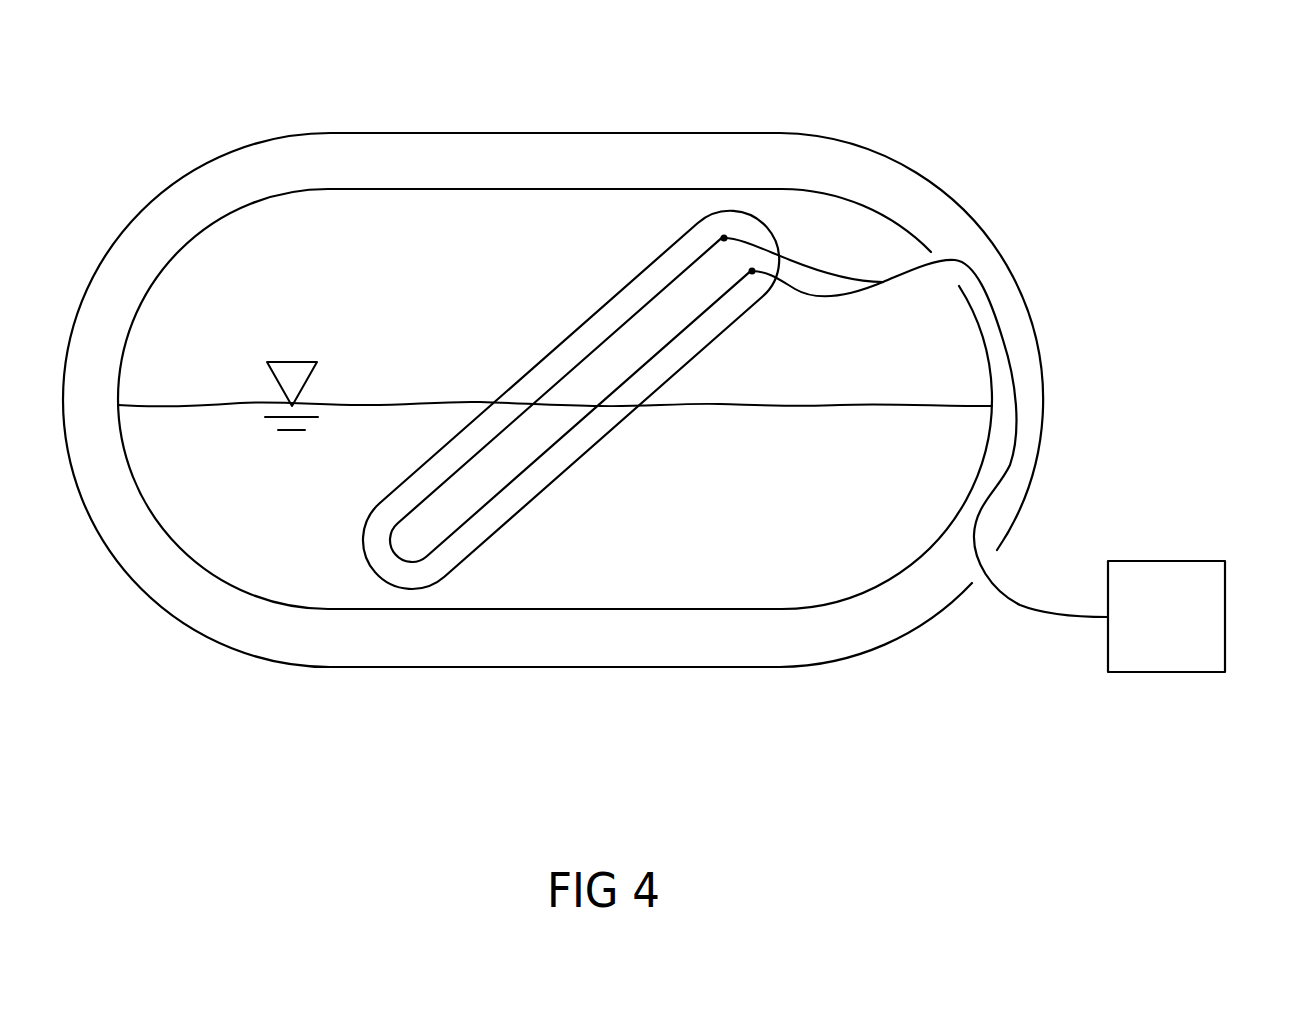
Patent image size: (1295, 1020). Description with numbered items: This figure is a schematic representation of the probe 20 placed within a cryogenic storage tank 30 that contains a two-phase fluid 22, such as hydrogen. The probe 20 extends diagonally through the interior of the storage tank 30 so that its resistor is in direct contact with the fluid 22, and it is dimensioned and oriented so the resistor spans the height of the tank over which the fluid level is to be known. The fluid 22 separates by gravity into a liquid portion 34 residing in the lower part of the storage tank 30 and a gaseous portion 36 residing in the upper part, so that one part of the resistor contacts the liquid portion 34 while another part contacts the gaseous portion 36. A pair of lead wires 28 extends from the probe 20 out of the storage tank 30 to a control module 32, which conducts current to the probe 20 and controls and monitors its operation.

The probe 20 is at (549, 305).
The fluid 22 is at (336, 245).
The lead wires 28 is at (1052, 615).
The cryogenic storage tank 30 is at (557, 133).
The control module 32 is at (1173, 565).
The liquid portion 34 is at (222, 486).
The gaseous portion 36 is at (222, 338).